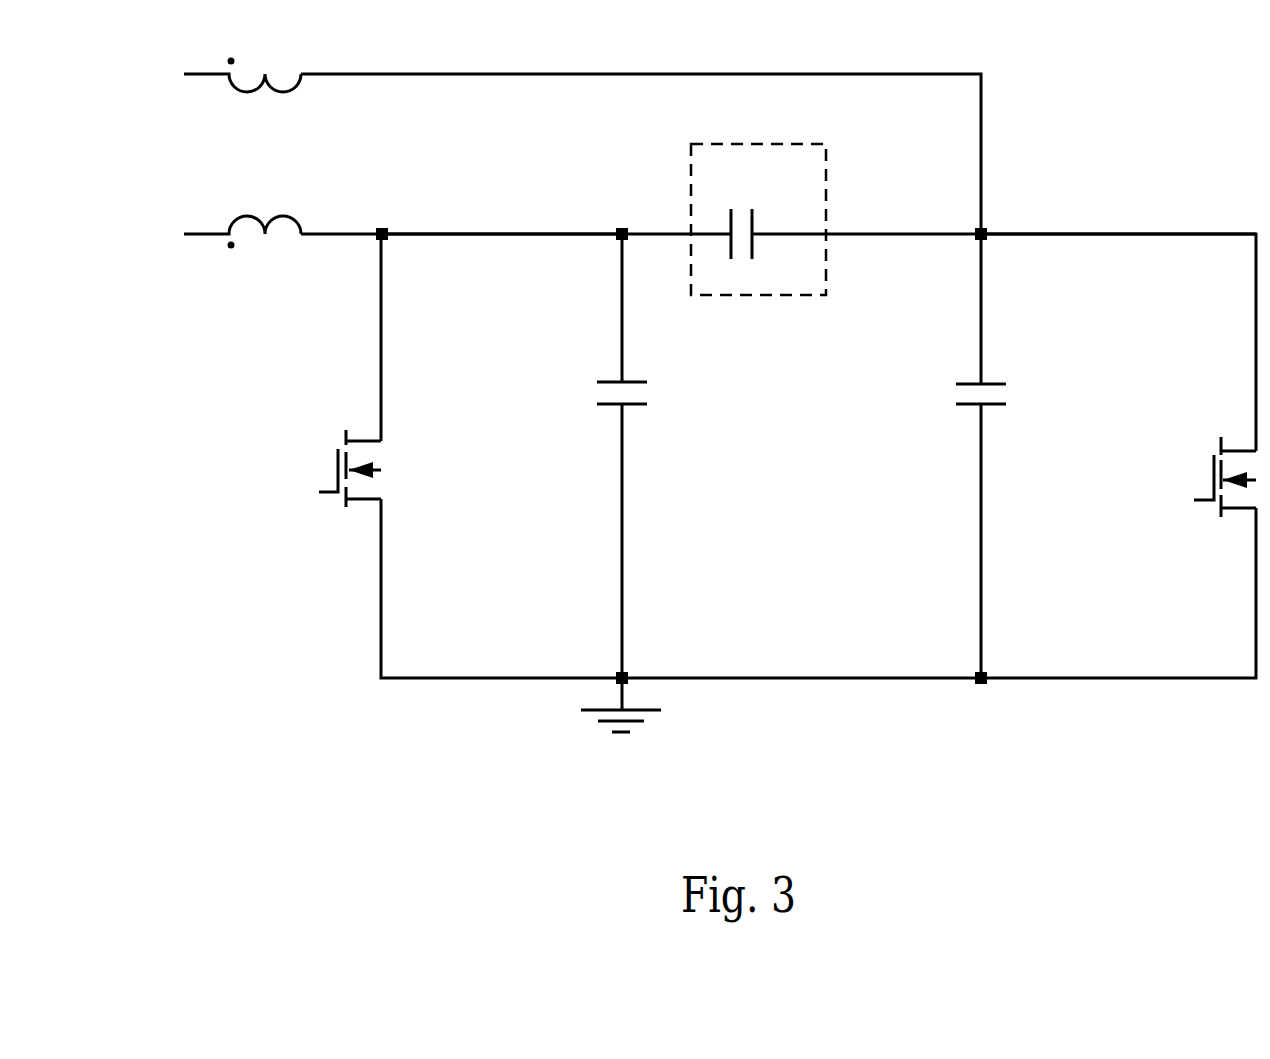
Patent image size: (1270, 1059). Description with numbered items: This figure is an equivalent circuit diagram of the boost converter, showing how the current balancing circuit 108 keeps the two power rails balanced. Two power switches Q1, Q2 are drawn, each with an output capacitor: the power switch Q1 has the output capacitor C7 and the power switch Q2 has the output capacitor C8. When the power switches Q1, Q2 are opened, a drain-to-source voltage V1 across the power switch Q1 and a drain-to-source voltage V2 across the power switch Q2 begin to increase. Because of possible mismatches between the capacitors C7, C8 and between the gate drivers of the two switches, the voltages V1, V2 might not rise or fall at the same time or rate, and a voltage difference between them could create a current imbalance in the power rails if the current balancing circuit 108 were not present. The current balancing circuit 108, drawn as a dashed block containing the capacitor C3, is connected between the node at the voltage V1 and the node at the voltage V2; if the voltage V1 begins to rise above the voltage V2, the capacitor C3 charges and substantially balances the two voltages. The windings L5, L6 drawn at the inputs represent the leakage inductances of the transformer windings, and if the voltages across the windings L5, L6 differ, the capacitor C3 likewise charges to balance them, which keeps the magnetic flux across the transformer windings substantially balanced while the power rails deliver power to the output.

The winding L6 is at (242, 59).
The winding L5 is at (242, 249).
The drain-to-source voltage V1 is at (502, 259).
The drain-to-source voltage V2 is at (1118, 255).
The current balancing circuit 108 is at (790, 141).
The capacitor C3 is at (766, 212).
The output capacitor C7 is at (653, 389).
The output capacitor C8 is at (1012, 389).
The power switch Q1 is at (332, 493).
The power switch Q2 is at (1206, 497).